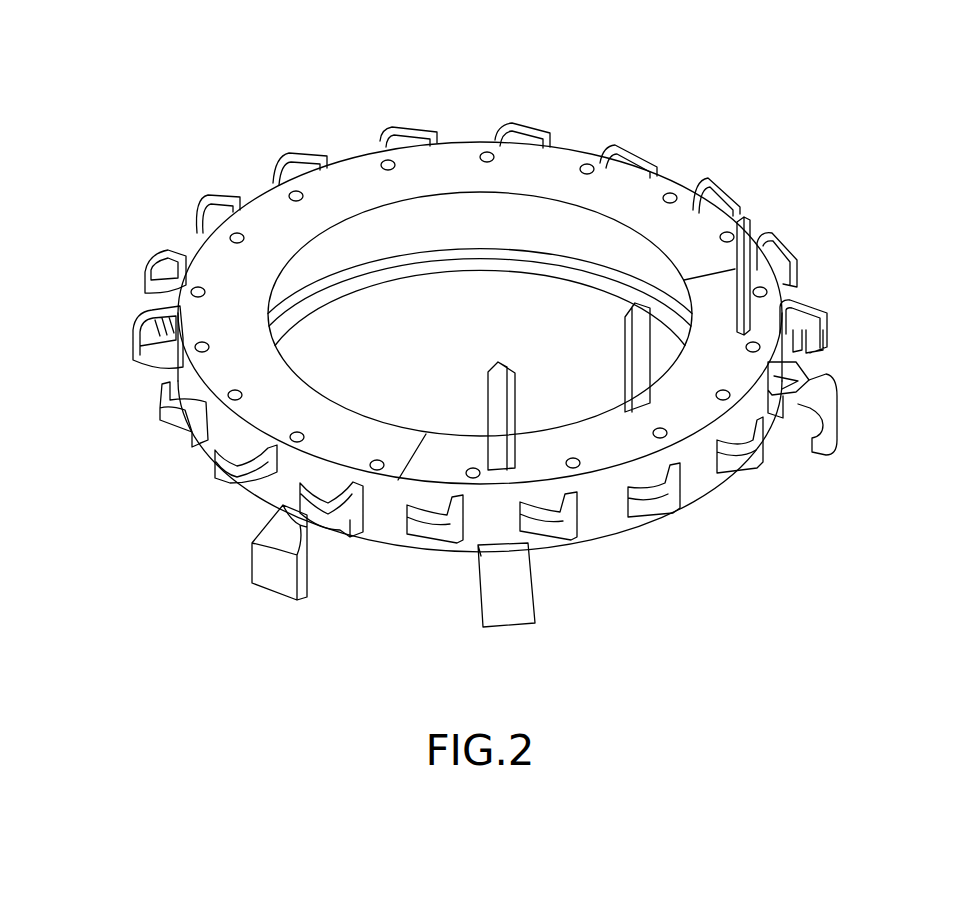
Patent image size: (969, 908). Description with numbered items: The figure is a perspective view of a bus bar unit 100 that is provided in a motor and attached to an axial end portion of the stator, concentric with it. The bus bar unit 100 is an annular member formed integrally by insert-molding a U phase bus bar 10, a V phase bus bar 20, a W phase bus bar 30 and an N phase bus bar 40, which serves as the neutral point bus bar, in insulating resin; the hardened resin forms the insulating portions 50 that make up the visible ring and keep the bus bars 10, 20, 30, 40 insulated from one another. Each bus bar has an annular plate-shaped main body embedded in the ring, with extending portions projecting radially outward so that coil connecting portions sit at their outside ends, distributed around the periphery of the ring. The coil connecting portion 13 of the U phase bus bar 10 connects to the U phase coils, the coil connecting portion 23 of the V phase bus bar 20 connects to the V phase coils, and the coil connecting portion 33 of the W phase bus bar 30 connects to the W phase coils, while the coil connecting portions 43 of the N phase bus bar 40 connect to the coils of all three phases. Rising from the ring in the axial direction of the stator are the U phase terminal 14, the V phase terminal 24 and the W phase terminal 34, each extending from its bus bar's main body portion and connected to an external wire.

The bus bar unit 100 is at (672, 138).
The insulating portion 50 is at (519, 168).
The U phase terminal 14 is at (500, 405).
The W phase terminal 34 is at (630, 344).
The V phase terminal 24 is at (743, 225).
The U phase bus bar 10 is at (215, 470).
The coil connecting portion 13 is at (230, 473).
The V phase bus bar 20 is at (643, 518).
The coil connecting portion 23 is at (663, 503).
The W phase bus bar 30 is at (423, 545).
The coil connecting portion 33 is at (443, 538).
The N phase bus bar 40 is at (722, 480).
The coil connecting portion 43 is at (168, 422).